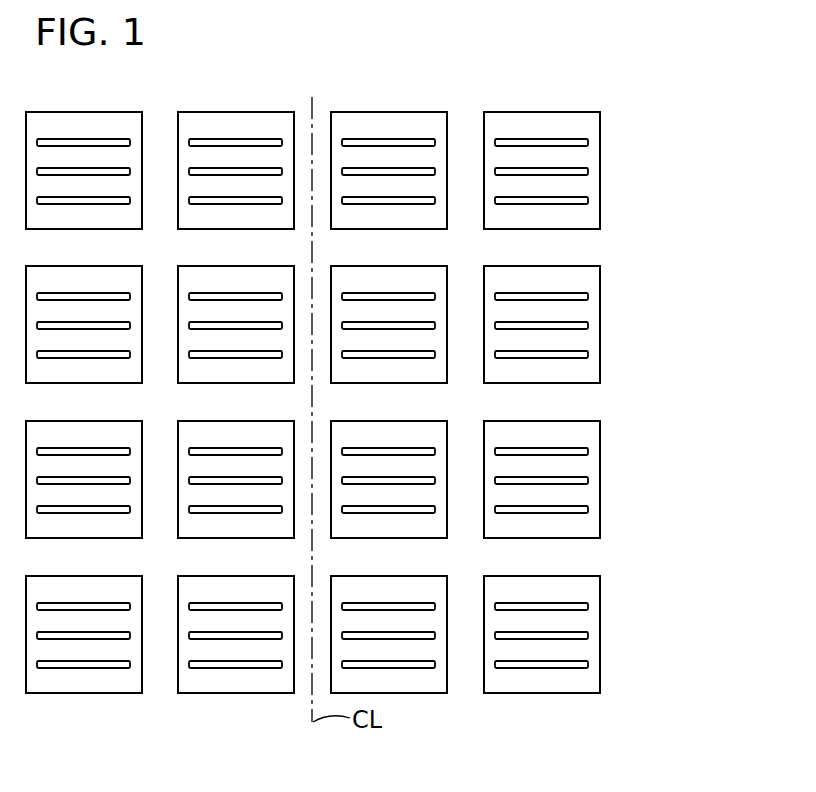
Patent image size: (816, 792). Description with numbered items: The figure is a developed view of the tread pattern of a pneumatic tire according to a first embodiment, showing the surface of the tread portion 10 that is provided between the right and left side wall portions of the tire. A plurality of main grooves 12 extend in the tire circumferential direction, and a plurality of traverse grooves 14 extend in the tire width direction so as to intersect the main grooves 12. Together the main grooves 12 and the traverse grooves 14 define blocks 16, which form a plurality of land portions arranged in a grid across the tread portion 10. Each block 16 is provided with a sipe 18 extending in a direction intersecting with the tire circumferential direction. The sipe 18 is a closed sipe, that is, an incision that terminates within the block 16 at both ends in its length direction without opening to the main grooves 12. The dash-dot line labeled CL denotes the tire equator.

The tread portion 10 is at (327, 80).
The main groove 12 is at (162, 130).
The traverse groove 14 is at (578, 247).
The block 16 is at (410, 122).
The sipe 18 is at (96, 136).